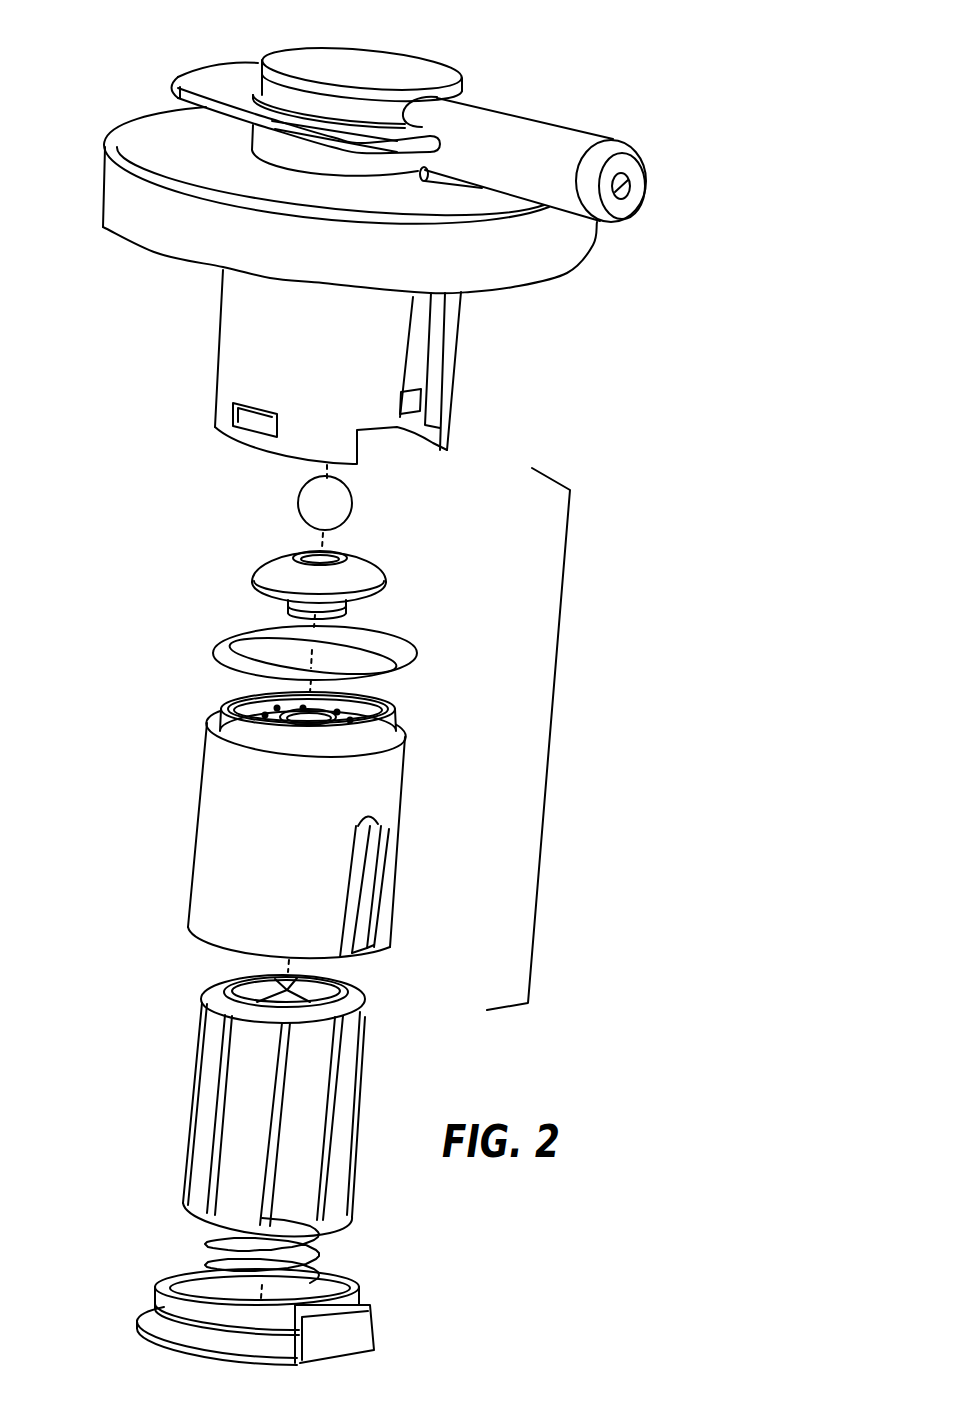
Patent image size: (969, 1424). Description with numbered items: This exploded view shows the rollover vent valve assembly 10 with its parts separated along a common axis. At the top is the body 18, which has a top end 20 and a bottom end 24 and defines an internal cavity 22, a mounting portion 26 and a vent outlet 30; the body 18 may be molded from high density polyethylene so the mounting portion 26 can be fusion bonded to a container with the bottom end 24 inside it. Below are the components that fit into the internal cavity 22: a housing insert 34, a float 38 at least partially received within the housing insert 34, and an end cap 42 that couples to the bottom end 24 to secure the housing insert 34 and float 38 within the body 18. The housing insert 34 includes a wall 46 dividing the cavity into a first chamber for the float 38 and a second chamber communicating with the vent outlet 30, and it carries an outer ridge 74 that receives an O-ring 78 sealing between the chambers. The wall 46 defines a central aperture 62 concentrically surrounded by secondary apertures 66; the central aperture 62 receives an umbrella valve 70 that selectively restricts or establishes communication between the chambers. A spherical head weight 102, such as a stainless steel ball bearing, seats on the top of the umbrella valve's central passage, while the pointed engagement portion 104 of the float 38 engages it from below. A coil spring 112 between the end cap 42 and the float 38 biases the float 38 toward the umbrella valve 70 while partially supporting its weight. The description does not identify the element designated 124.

The rollover vent valve assembly 10 is at (567, 40).
The body 18 is at (293, 62).
The top end 20 is at (438, 51).
The internal cavity 22 is at (410, 450).
The bottom end 24 is at (196, 433).
The mounting portion 26 is at (135, 141).
The vent outlet 30 is at (610, 140).
The housing insert 34 is at (370, 785).
The float 38 is at (347, 1097).
The end cap 42 is at (343, 1320).
The wall 46 is at (365, 715).
The central aperture 62 is at (323, 708).
The secondary apertures 66 is at (259, 702).
The umbrella valve 70 is at (360, 574).
The outer ridge 74 is at (204, 723).
The O-ring 78 is at (240, 632).
The head weight 102 is at (307, 505).
The engagement portion 104 is at (300, 973).
The spring 112 is at (322, 1244).
The cartridge assembly 124 is at (549, 756).